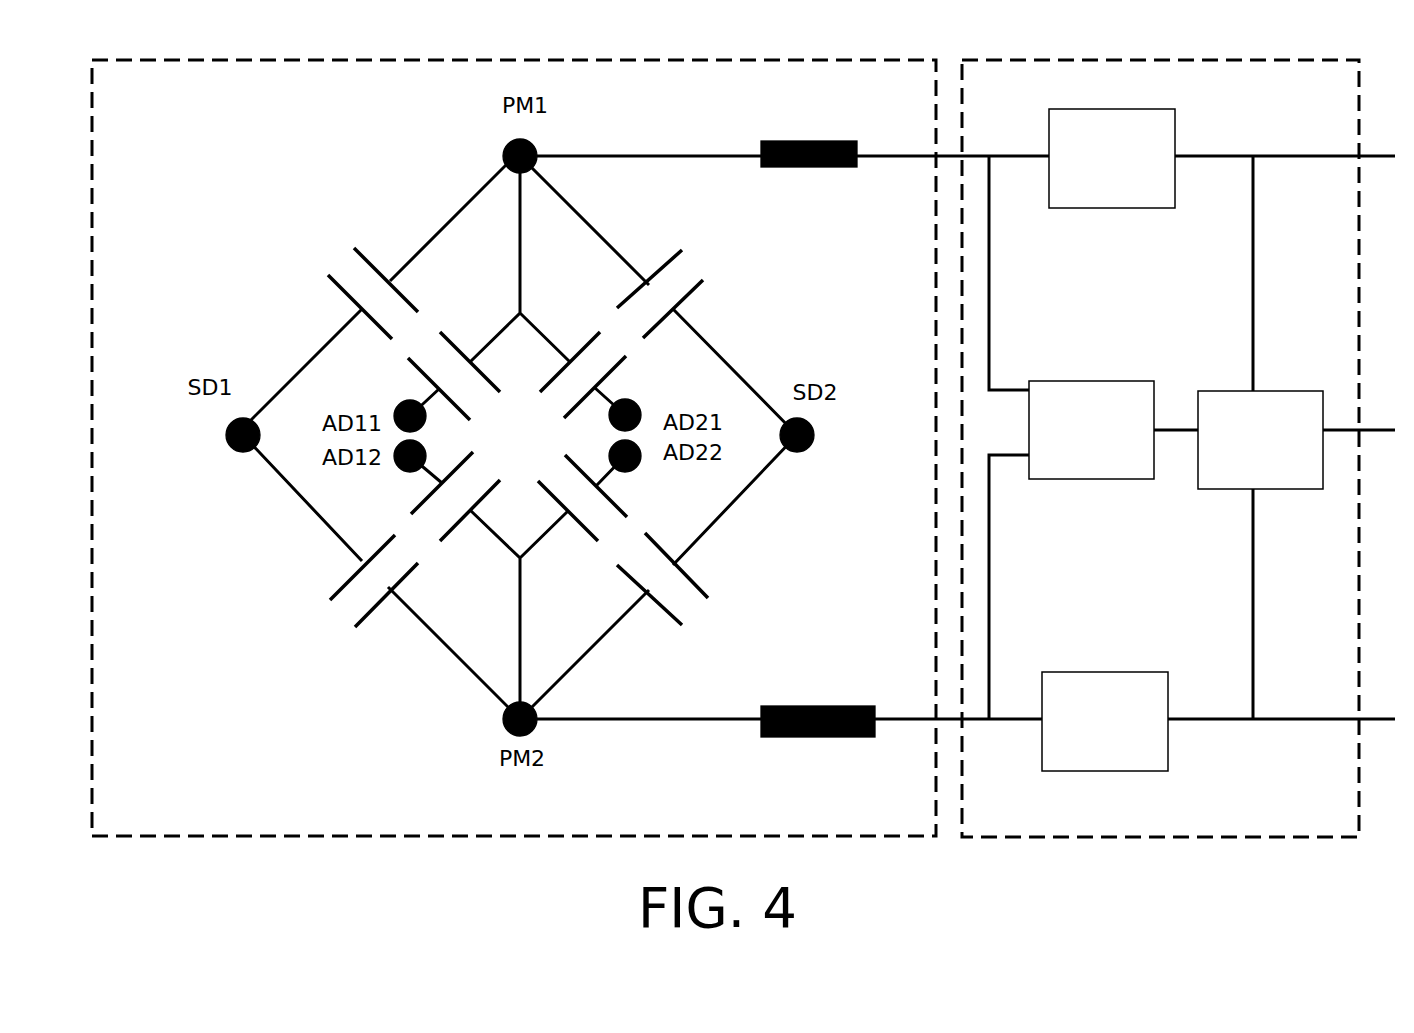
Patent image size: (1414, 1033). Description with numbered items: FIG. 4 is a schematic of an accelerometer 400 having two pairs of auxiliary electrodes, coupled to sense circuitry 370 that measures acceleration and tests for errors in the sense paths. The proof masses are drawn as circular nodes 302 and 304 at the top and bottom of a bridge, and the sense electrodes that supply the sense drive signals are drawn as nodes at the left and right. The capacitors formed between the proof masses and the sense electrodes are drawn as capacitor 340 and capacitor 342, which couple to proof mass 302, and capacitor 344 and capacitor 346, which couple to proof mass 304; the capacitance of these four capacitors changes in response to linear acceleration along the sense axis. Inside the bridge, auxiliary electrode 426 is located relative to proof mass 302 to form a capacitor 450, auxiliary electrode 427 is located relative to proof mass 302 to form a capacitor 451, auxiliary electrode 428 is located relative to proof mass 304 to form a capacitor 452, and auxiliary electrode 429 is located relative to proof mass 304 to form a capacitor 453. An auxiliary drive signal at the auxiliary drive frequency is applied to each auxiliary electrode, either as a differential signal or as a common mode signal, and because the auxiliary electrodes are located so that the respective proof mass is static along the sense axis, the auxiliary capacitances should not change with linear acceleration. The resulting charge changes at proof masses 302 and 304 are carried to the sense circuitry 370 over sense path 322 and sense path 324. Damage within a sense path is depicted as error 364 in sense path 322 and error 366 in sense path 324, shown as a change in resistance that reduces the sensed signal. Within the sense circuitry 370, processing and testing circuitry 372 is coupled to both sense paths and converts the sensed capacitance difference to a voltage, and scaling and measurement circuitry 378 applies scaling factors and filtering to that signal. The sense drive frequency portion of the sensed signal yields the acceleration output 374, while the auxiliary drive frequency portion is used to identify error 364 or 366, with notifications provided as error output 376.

The sensor bridge circuit 400 is at (215, 58).
The sense circuitry 370 is at (1088, 58).
The proof mass 302 is at (504, 160).
The proof mass 304 is at (536, 727).
The sense path 322 is at (703, 154).
The sense path 324 is at (712, 720).
The capacitor 340 is at (330, 274).
The capacitor 342 is at (700, 276).
The capacitor 344 is at (670, 610).
The capacitor 346 is at (330, 598).
The error 364 is at (833, 140).
The error 366 is at (835, 738).
The processing and testing circuitry 372 is at (1100, 380).
The acceleration output 374 is at (1112, 209).
The error output 376 is at (1107, 771).
The scaling and measure circuit 378 is at (1276, 490).
The auxiliary electrode 426 is at (399, 404).
The auxiliary electrode 427 is at (637, 402).
The auxiliary electrode 428 is at (398, 483).
The auxiliary electrode 429 is at (640, 477).
The capacitor 450 is at (456, 344).
The capacitor 451 is at (585, 344).
The capacitor 452 is at (455, 532).
The capacitor 453 is at (585, 532).